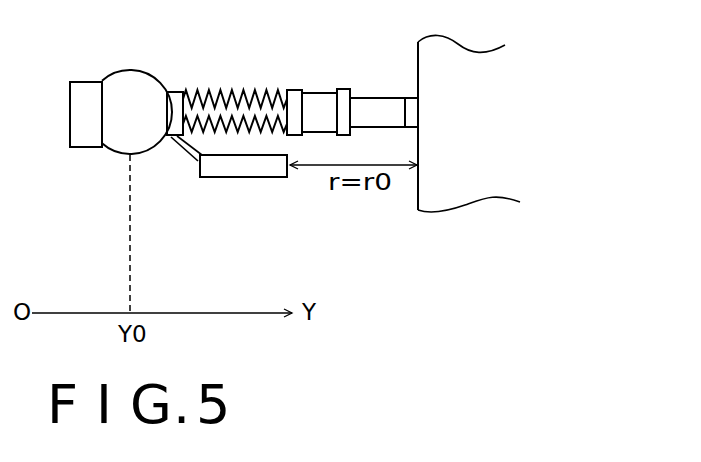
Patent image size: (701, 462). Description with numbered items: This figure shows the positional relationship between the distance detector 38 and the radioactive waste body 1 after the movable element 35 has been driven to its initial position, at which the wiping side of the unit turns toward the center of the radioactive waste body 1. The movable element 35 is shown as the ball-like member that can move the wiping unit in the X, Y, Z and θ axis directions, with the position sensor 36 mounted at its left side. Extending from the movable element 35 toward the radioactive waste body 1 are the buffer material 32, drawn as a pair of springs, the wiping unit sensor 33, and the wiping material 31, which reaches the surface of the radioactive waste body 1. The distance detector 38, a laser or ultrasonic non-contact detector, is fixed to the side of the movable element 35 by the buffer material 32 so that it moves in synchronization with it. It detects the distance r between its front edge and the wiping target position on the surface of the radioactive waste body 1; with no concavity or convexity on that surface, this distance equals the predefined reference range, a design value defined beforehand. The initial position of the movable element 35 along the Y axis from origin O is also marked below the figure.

The radioactive waste body 1 is at (430, 58).
The wiping material 31 is at (382, 110).
The buffer material 32 is at (240, 92).
The wiping unit sensor 33 is at (318, 102).
The movable element 35 is at (130, 92).
The position sensor 36 is at (83, 95).
The distance detector 38 is at (238, 168).